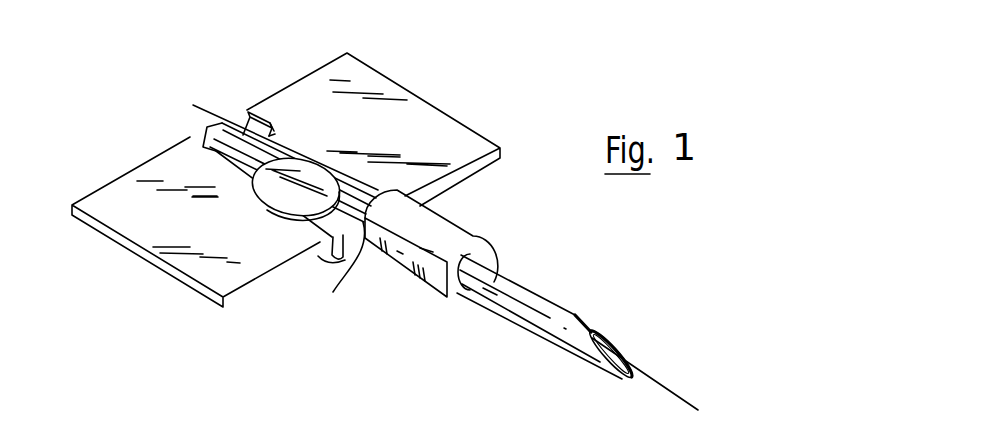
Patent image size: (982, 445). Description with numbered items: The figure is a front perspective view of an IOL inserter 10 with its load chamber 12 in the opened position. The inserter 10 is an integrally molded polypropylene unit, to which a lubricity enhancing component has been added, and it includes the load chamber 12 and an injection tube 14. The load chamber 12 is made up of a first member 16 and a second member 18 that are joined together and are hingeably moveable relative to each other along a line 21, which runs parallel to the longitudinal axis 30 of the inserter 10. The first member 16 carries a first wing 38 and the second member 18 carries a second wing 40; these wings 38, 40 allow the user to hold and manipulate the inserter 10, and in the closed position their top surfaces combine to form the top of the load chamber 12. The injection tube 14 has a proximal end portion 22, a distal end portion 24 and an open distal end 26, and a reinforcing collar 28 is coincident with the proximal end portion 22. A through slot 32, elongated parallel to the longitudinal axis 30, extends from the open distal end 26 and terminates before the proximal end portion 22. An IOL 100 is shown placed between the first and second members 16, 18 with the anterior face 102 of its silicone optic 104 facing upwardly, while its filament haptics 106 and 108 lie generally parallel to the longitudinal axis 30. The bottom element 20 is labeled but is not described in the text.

The IOL inserter 10 is at (125, 302).
The load chamber 12 is at (140, 146).
The injection tube 14 is at (437, 316).
The first member 16 is at (206, 146).
The second member 18 is at (241, 131).
The bottom element 20 is at (364, 441).
The line 21 is at (240, 191).
The proximal end portion 22 is at (399, 289).
The distal end portion 24 is at (584, 372).
The open distal end 26 is at (623, 345).
The reinforcing collar 28 is at (458, 232).
The longitudinal axis 30 is at (692, 403).
The through slot 32 is at (580, 317).
The first wing 38 is at (186, 257).
The second wing 40 is at (463, 132).
The IOL 100 is at (240, 191).
The anterior face 102 is at (304, 160).
The optic 104 is at (336, 172).
The filament haptic 106 is at (251, 112).
The filament haptic 108 is at (340, 285).